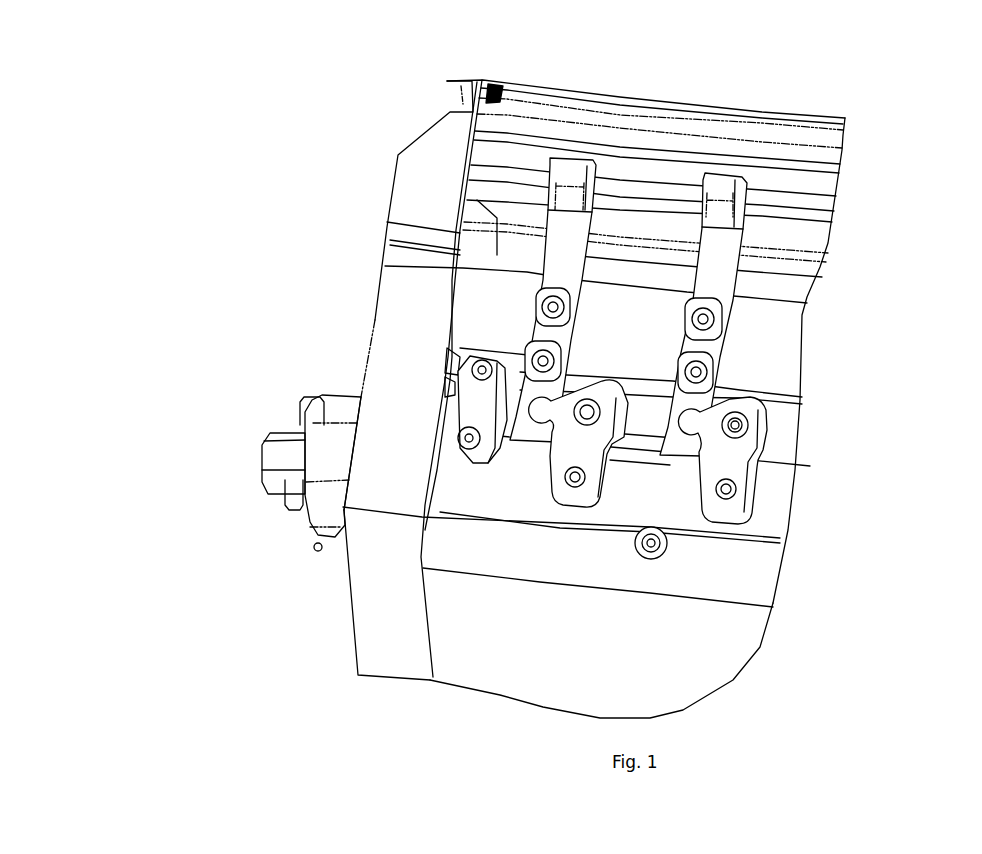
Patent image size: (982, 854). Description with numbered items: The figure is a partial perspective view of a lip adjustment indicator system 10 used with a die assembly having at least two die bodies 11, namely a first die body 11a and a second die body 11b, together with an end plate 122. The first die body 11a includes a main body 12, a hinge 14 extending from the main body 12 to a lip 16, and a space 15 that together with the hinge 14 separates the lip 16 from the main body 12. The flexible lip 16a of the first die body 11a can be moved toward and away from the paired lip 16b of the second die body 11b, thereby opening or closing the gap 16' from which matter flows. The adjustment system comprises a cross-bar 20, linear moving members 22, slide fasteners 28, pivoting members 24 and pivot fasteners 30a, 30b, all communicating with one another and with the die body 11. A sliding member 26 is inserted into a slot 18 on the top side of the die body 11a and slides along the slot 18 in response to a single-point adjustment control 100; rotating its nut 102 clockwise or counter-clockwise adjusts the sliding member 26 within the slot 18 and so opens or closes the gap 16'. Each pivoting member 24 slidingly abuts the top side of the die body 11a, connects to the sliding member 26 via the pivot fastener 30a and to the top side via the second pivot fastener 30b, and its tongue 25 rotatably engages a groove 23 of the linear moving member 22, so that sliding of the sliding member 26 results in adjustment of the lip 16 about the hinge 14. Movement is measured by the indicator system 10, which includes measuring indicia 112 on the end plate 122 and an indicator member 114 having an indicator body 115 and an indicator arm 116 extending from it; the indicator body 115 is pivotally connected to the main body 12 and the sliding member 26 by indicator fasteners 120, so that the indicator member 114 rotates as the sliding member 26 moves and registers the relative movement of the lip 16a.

The lip adjustment indicator system 10 is at (237, 175).
The die body 11 is at (785, 585).
The first die body 11a is at (842, 188).
The second die body 11b is at (675, 94).
The main body 12 is at (710, 668).
The hinge 14 is at (822, 274).
The space 15 is at (483, 248).
The lip 16 is at (706, 137).
The gap 16' is at (713, 161).
The flexible lip 16a is at (810, 141).
The lip 16b is at (831, 126).
The slot 18 is at (728, 543).
The cross-bar 20 is at (822, 212).
The linear moving member 22 is at (540, 240).
The groove 23 is at (688, 433).
The pivoting member 24 is at (720, 510).
The tongue 25 is at (562, 377).
The sliding member 26 is at (773, 528).
The slide fastener 28 is at (712, 320).
The pivot fastener 30a is at (735, 487).
The second pivot fastener 30b is at (740, 423).
The single-point adjustment control 100 is at (237, 480).
The nut 102 is at (263, 445).
The measuring indicia 112 is at (360, 347).
The indicator member 114 is at (470, 470).
The indicator body 115 is at (485, 467).
The indicator arm 116 is at (458, 367).
The indicator fastener 120 is at (484, 360).
The end plate 122 is at (357, 645).